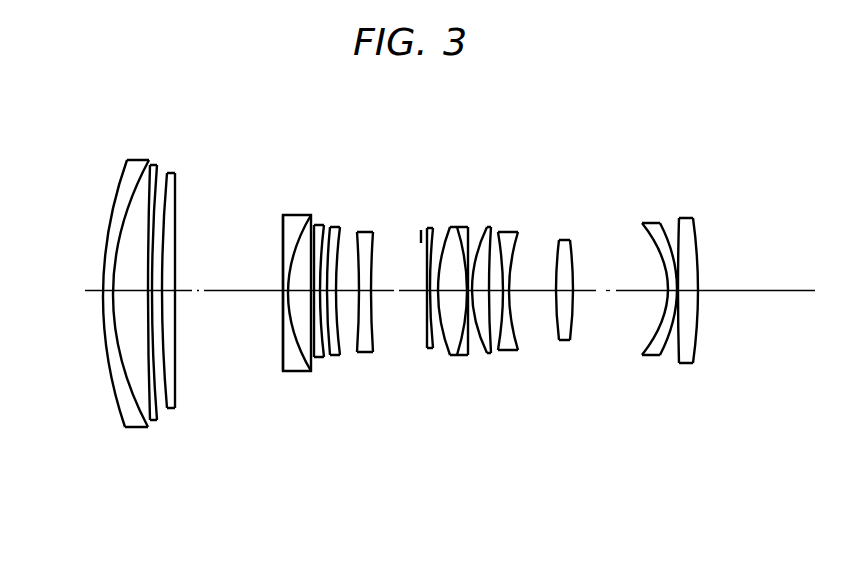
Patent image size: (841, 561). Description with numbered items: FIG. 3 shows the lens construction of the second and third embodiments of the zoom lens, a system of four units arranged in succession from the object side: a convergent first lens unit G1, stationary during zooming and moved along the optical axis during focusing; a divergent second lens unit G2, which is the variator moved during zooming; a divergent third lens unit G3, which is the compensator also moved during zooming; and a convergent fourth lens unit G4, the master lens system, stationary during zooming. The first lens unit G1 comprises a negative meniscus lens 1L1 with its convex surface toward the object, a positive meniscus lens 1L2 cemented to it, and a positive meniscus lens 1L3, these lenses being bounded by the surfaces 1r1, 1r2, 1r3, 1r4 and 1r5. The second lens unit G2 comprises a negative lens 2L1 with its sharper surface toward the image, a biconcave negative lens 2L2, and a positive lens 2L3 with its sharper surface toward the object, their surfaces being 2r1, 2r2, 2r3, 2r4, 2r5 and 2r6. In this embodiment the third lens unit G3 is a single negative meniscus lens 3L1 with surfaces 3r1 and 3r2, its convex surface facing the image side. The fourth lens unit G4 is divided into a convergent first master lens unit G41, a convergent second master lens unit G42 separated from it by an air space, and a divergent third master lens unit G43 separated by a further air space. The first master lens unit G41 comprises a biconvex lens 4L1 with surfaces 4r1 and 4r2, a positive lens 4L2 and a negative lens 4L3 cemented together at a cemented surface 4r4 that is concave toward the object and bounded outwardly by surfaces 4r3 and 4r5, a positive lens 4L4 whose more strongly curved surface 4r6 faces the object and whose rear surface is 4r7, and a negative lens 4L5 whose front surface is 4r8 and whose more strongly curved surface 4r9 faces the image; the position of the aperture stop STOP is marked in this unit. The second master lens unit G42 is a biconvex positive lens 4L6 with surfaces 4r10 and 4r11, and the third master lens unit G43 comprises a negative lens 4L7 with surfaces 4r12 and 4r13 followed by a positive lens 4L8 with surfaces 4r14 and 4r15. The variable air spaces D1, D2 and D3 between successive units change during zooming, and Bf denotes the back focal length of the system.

The first lens unit G1 is at (210, 116).
The second lens unit G2 is at (337, 145).
The third lens unit G3 is at (378, 194).
The fourth lens unit G4 is at (692, 111).
The first master lens unit G41 is at (562, 146).
The second master lens unit G42 is at (592, 194).
The third master lens unit G43 is at (705, 194).
The negative meniscus lens 1L1 is at (127, 159).
The positive meniscus lens 1L2 is at (153, 165).
The positive meniscus lens 1L3 is at (170, 173).
The negative lens 2L1 is at (287, 222).
The biconcave negative lens 2L2 is at (317, 225).
The positive lens 2L3 is at (337, 227).
The negative meniscus lens 3L1 is at (365, 233).
The biconvex lens 4L1 is at (423, 231).
The positive lens 4L2 is at (447, 231).
The negative lens 4L3 is at (458, 231).
The positive lens 4L4 is at (490, 231).
The negative lens 4L5 is at (510, 231).
The biconvex positive lens 4L6 is at (563, 239).
The negative lens 4L7 is at (647, 224).
The positive lens 4L8 is at (685, 220).
The lens surface 1r1 is at (121, 418).
The lens surface 1r2 is at (142, 423).
The lens surface 1r3 is at (152, 420).
The lens surface 1r4 is at (158, 420).
The lens surface 1r5 is at (176, 405).
The lens surface 2r1 is at (282, 356).
The lens surface 2r2 is at (312, 350).
The lens surface 2r3 is at (316, 360).
The lens surface 2r4 is at (326, 362).
The lens surface 2r5 is at (332, 358).
The lens surface 2r6 is at (342, 357).
The lens surface 3r1 is at (357, 348).
The lens surface 3r2 is at (373, 325).
The lens surface 4r1 is at (422, 347).
The lens surface 4r2 is at (434, 352).
The lens surface 4r3 is at (447, 357).
The cemented surface 4r4 is at (458, 358).
The lens surface 4r5 is at (469, 358).
The lens surface 4r6 is at (485, 352).
The lens surface 4r7 is at (492, 355).
The lens surface 4r8 is at (500, 352).
The lens surface 4r9 is at (516, 352).
The lens surface 4r10 is at (557, 330).
The lens surface 4r11 is at (570, 334).
The lens surface 4r12 is at (644, 343).
The lens surface 4r13 is at (665, 356).
The lens surface 4r14 is at (679, 364).
The lens surface 4r15 is at (692, 364).
The aperture stop STOP is at (424, 349).
The air space D1 is at (226, 281).
The air space D2 is at (352, 288).
The air space D3 is at (394, 283).
The back focal length Bf is at (766, 283).